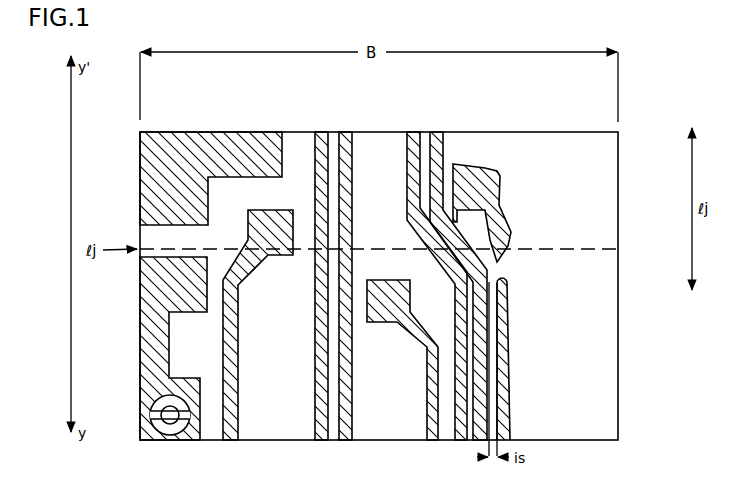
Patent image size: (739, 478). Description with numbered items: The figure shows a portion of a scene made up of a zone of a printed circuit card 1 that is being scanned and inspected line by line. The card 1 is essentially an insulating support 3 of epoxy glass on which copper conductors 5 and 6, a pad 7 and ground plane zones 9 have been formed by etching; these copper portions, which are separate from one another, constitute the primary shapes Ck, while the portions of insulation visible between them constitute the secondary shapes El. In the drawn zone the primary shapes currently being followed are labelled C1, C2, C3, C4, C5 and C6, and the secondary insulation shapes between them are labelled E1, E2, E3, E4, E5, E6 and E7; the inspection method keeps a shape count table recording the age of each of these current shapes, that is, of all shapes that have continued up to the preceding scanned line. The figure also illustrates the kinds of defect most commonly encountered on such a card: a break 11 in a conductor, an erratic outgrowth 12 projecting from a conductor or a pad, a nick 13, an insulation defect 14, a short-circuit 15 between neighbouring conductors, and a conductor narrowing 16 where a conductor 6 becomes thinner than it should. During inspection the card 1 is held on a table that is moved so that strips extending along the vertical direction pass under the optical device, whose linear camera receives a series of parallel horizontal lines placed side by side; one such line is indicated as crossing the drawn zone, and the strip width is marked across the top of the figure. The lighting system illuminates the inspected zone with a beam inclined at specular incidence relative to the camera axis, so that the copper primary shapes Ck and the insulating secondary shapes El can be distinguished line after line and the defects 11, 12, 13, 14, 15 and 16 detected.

The printed circuit card 1 is at (598, 229).
The insulating support 3 is at (583, 320).
The conductor 5 is at (447, 145).
The conductor 6 is at (508, 402).
The pad 7 is at (488, 190).
The ground plane zone 9 is at (160, 292).
The break 11 is at (508, 262).
The erratic outgrowth 12 is at (512, 226).
The nick 13 is at (500, 172).
The insulation defect 14 is at (455, 208).
The short-circuit 15 is at (507, 272).
The conductor narrowing 16 is at (513, 364).
The secondary shape E1 is at (218, 207).
The secondary shape E2 is at (307, 197).
The secondary shape E3 is at (334, 155).
The secondary shape E4 is at (380, 233).
The secondary shape E5 is at (426, 150).
The secondary shape E6 is at (473, 237).
The secondary shape E7 is at (580, 227).
The secondary shape El is at (163, 232).
The primary shape C1 is at (283, 215).
The primary shape C2 is at (322, 165).
The primary shape C3 is at (347, 160).
The primary shape C4 is at (414, 145).
The primary shape C5 is at (440, 145).
The primary shape C6 is at (480, 168).
The primary shape Ck is at (262, 220).